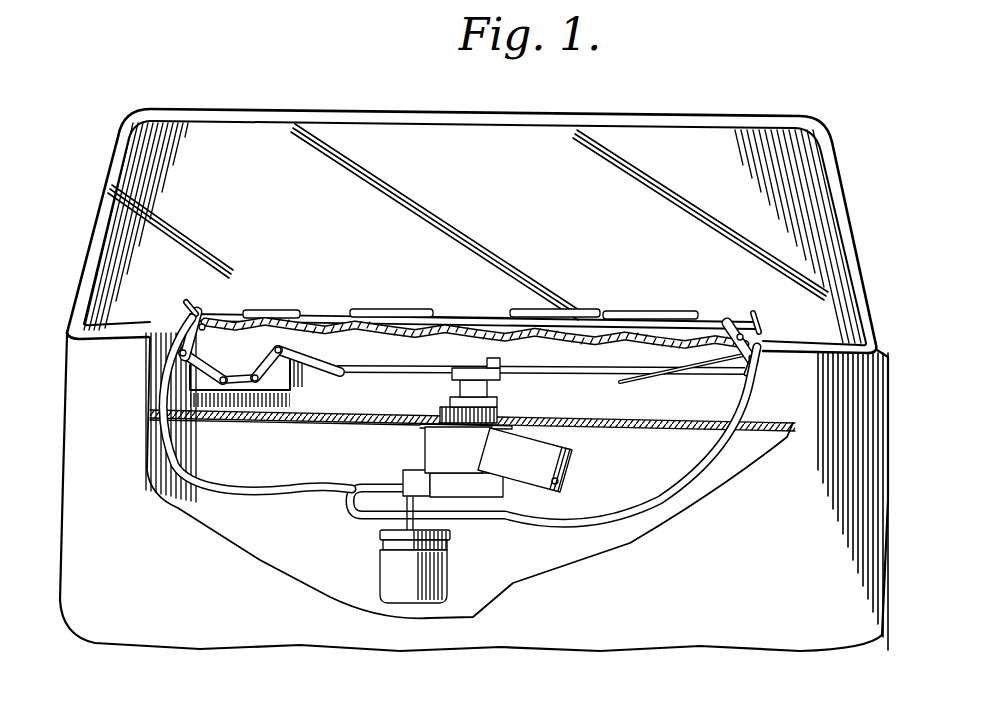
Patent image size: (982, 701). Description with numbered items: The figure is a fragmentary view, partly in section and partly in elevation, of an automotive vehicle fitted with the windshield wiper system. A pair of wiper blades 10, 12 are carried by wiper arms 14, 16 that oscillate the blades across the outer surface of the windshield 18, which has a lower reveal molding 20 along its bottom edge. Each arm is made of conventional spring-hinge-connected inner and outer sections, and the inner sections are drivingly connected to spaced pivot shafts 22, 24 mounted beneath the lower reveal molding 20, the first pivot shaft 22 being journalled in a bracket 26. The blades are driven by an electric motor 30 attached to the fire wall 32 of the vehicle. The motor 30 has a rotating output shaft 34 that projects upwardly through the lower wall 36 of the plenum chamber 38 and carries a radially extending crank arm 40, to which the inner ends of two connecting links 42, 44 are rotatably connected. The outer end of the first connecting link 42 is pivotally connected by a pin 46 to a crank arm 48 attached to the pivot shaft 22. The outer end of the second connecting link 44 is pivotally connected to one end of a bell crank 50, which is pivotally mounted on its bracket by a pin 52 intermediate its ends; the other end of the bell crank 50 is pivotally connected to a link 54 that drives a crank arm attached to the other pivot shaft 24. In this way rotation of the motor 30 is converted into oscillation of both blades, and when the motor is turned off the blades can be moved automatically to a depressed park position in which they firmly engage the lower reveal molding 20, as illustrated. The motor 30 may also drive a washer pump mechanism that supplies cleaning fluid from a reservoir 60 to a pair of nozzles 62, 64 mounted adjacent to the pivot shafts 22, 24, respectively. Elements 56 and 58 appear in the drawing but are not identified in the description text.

The wiper blade 10 is at (530, 310).
The wiper blade 12 is at (367, 310).
The wiper arm 14 is at (632, 305).
The wiper arm 16 is at (280, 303).
The windshield 18 is at (385, 140).
The lower reveal molding 20 is at (457, 310).
The pivot shaft 22 is at (738, 325).
The pivot shaft 24 is at (197, 306).
The bracket 26 is at (705, 378).
The electric motor 30 is at (570, 463).
The fire wall 32 is at (517, 573).
The output shaft 34 is at (453, 378).
The lower wall 36 is at (340, 420).
The plenum chamber 38 is at (372, 393).
The crank arm 40 is at (503, 380).
The connecting link 42 is at (587, 377).
The connecting link 44 is at (347, 370).
The pin 46 is at (745, 375).
The crank arm 48 is at (777, 357).
The bell crank 50 is at (273, 407).
The pin 52 is at (233, 400).
The link 54 is at (197, 367).
The cable 56 is at (163, 340).
The gear box 58 is at (490, 490).
The reservoir 60 is at (393, 583).
The nozzle 62 is at (760, 313).
The nozzle 64 is at (190, 302).